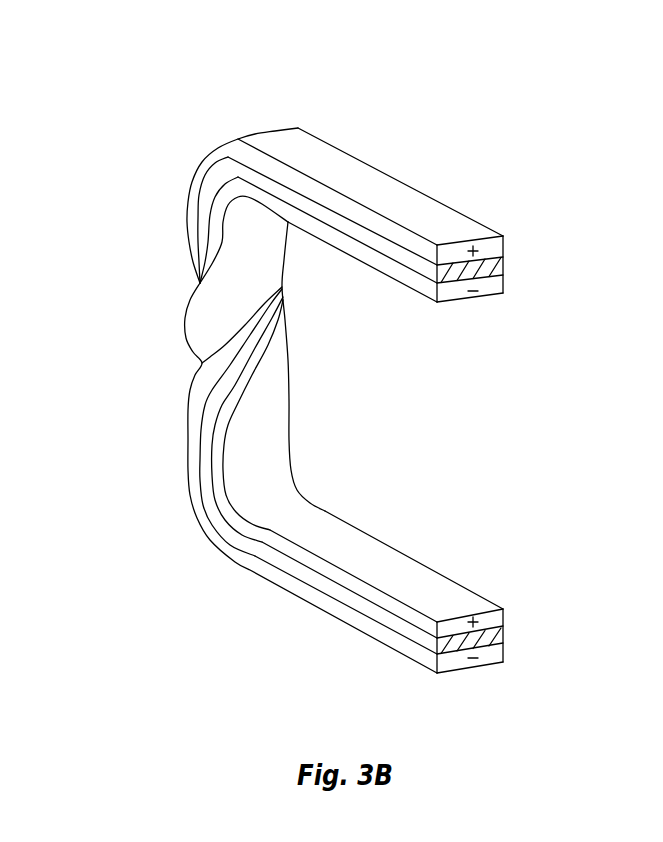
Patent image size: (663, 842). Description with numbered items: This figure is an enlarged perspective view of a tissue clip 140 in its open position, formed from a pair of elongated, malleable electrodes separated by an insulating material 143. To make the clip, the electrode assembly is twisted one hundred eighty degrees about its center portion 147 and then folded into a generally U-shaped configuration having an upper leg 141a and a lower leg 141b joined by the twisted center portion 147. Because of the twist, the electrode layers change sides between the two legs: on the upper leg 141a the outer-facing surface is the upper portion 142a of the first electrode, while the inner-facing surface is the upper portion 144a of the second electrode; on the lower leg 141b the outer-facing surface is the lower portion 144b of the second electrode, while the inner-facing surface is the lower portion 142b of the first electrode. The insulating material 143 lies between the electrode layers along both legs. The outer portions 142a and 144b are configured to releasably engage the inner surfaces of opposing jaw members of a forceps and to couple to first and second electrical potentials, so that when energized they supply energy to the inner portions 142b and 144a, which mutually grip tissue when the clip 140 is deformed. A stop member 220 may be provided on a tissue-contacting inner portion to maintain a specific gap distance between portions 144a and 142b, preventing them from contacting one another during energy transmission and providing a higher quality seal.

The tissue clip 140 is at (513, 224).
The upper leg 141a is at (182, 204).
The lower leg 141b is at (186, 434).
The upper portion of first electrode 142a is at (500, 244).
The lower portion of first electrode 142b is at (497, 622).
The insulating material 143 is at (500, 266).
The upper portion of second electrode 144a is at (500, 290).
The lower portion of second electrode 144b is at (495, 657).
The center portion 147 is at (197, 286).
The stop member 220 is at (297, 520).